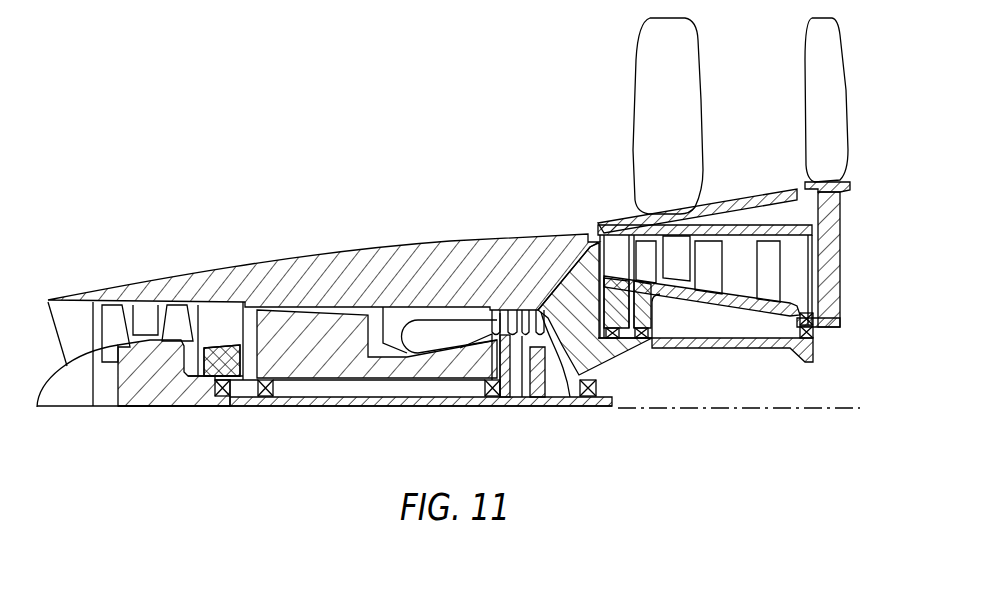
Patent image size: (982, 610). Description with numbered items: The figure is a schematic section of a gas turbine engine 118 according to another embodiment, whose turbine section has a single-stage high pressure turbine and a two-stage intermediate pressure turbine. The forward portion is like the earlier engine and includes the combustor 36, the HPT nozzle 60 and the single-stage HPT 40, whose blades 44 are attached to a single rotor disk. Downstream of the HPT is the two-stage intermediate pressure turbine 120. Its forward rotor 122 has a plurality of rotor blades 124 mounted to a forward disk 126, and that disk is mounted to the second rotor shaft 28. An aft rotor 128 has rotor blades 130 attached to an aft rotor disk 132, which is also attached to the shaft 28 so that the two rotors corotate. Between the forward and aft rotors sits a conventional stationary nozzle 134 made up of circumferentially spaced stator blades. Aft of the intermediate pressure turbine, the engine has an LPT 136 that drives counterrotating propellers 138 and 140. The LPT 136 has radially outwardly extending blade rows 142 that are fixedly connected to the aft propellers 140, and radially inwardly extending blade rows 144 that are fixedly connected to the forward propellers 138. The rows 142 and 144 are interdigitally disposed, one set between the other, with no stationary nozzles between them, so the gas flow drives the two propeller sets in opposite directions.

The second rotor shaft 28 is at (248, 406).
The combustor 36 is at (442, 343).
The single-stage HPT 40 is at (494, 309).
The blades 44 is at (497, 343).
The HPT nozzle 60 is at (488, 316).
The gas turbine engine 118 is at (385, 239).
The two-stage intermediate pressure turbine 120 is at (559, 380).
The forward rotor 122 is at (513, 403).
The rotor blades 124 is at (509, 311).
The forward disk 126 is at (505, 376).
The aft rotor 128 is at (538, 404).
The rotor blades 130 is at (549, 327).
The aft rotor disk 132 is at (547, 385).
The stationary nozzle 134 is at (529, 311).
The LPT 136 is at (751, 187).
The forward propellers 138 is at (683, 128).
The aft propellers 140 is at (843, 142).
The radially outwardly extending blade rows 142 is at (708, 268).
The radially inwardly extending blade rows 144 is at (740, 259).